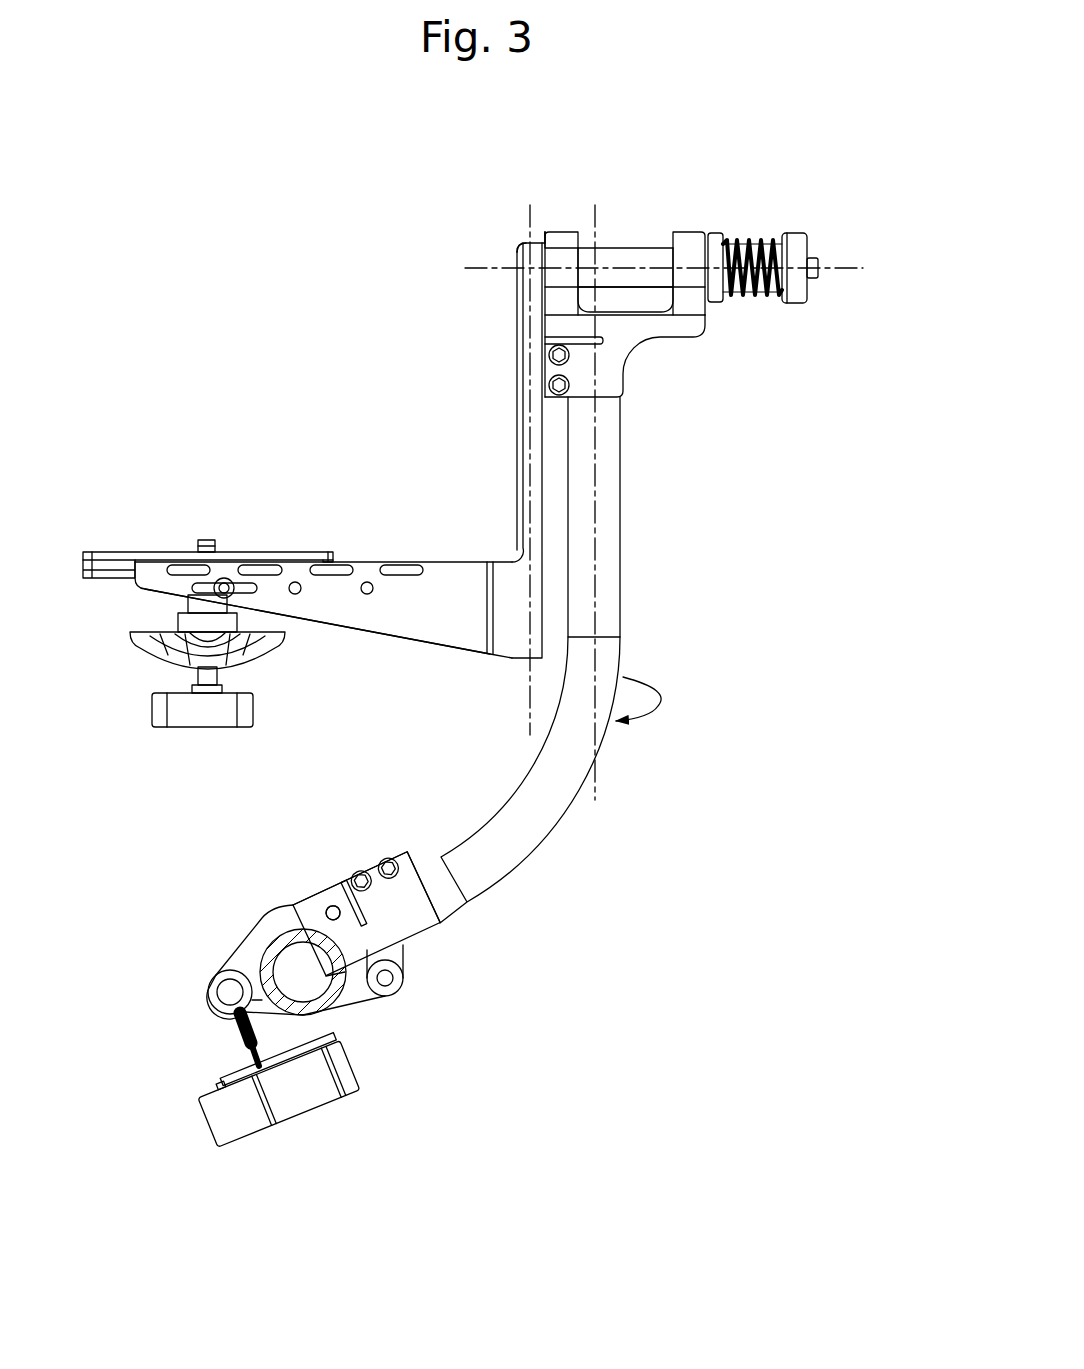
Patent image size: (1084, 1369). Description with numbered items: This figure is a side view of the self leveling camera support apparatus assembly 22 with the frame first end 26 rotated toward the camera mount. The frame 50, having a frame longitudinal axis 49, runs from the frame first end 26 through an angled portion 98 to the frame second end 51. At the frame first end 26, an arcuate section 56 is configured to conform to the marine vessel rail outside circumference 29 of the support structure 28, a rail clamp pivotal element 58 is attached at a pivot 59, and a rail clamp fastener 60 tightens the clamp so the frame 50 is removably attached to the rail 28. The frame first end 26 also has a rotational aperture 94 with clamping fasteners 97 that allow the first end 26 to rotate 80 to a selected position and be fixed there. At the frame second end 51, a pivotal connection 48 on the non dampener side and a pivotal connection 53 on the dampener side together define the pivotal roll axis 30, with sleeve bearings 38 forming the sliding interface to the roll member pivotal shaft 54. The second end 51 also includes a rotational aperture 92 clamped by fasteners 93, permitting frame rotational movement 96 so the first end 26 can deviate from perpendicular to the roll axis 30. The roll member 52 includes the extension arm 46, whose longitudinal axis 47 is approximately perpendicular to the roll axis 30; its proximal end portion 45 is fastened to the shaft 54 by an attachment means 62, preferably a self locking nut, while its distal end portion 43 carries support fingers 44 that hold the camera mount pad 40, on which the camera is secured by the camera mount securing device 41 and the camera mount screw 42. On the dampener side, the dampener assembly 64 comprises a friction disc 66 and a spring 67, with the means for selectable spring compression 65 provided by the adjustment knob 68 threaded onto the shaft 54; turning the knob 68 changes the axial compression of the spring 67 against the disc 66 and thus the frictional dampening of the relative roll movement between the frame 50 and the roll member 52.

The self leveling camera support apparatus assembly 22 is at (332, 270).
The frame first end 26 is at (423, 923).
The support structure in the form of a marine vessel railing 28 is at (367, 983).
The marine vessel rail outside circumference 29 is at (372, 1003).
The pivotal roll axis 30 is at (855, 252).
The pivotal roll axis bearings 38 is at (582, 236).
The camera mount pad 40 is at (110, 552).
The camera mount securing device 41 is at (190, 705).
The camera mount screw 42 is at (205, 540).
The extension arm distal end portion 43 is at (513, 627).
The extension arm distal end portion support fingers for camera mount pad 44 is at (452, 578).
The extension arm proximal end portion 45 is at (514, 237).
The extension arm 46 is at (517, 485).
The extension arm longitudinal axis 47 is at (527, 702).
The frame second end pivotal connection on the non dampener side 48 is at (567, 243).
The frame longitudinal axis 49 is at (600, 797).
The frame 50 is at (613, 613).
The frame second end 51 is at (640, 328).
The roll member 52 is at (448, 618).
The frame second end pivotal connection on dampener side 53 is at (699, 232).
The roll member pivotal shaft 54 is at (626, 258).
The marine vessel rail clamp arcuate section 56 is at (295, 925).
The marine vessel rail clamp pivotal element 58 is at (347, 1012).
The marine vessel rail clamp pivotal element pivot 59 is at (393, 980).
The marine vessel rail clamp fastener 60 is at (225, 1122).
The attachment means between extension arm proximal end portion and pivotal shaft 62 is at (515, 262).
The dampener assembly 64 is at (809, 326).
The means for selectable spring compression 65 is at (832, 298).
The dampener friction disc 66 is at (727, 303).
The dampener spring 67 is at (750, 240).
The dampener adjustment knob 68 is at (803, 233).
The frame first end selected rotational position 80 is at (277, 895).
The frame second end rotational aperture 92 is at (607, 398).
The frame second end rotational aperture clamping fasteners 93 is at (569, 385).
The frame first end rotational aperture 94 is at (410, 917).
The frame selected rotational position 96 is at (660, 705).
The frame first end rotational aperture clamping fasteners 97 is at (388, 860).
The extension arm angled portion 98 is at (530, 862).